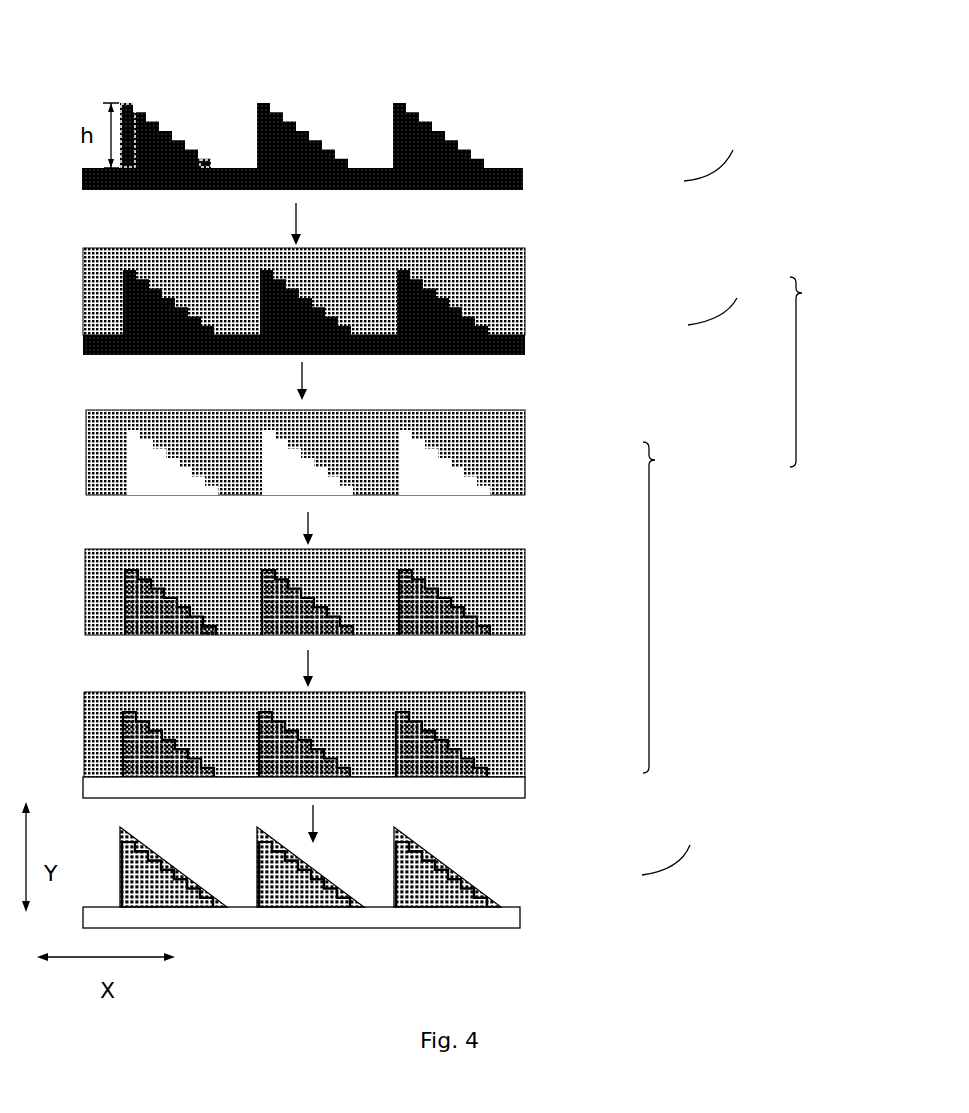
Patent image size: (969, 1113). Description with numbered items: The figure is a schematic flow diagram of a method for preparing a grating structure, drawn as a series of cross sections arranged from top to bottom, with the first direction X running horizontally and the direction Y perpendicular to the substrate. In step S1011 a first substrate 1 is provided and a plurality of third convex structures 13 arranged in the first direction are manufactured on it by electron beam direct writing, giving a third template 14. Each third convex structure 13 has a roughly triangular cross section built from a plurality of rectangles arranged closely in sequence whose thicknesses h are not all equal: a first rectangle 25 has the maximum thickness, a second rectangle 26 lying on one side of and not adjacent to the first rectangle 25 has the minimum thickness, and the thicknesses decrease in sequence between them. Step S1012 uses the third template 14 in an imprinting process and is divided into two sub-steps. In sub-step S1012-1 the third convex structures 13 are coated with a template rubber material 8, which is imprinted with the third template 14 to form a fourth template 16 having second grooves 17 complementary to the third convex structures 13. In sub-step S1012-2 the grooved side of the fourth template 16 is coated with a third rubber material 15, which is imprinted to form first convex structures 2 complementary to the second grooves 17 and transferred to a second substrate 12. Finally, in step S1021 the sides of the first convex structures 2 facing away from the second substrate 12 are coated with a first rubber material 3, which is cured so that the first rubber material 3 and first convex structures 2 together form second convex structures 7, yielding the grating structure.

The first substrate 1 is at (525, 178).
The third convex structures 13 is at (457, 141).
The third template 14 is at (361, 229).
The first rectangle 25 is at (126, 106).
The second rectangle 26 is at (207, 160).
The fourth template 16 is at (352, 512).
The template rubber material 8 is at (525, 281).
The second grooves 17 is at (525, 465).
The first convex structures 2 is at (374, 738).
The third rubber material 15 is at (525, 618).
The second substrate 12 is at (525, 784).
The first rubber material 3 is at (427, 852).
The second convex structures 7 is at (374, 867).
The step of providing the first substrate and manufacturing third convex structures S1011 is at (743, 153).
The step of imprinting with the third template S1012 is at (836, 372).
The step of forming the fourth template S1012-1 is at (734, 298).
The step of forming and transferring the first convex structures S1012-2 is at (706, 607).
The step of coating and curing the first rubber material S1021 is at (692, 839).